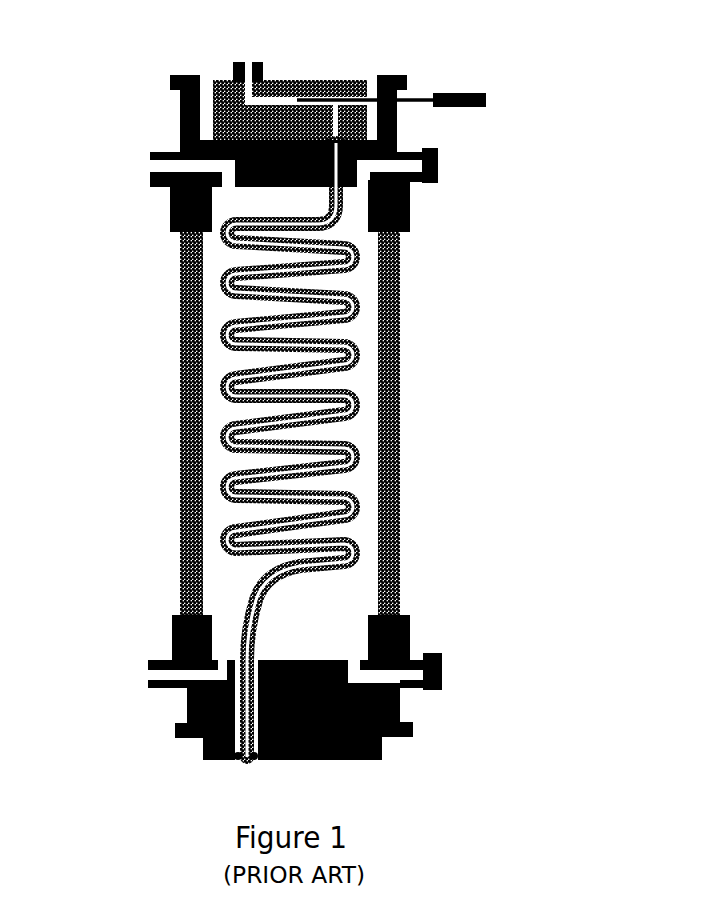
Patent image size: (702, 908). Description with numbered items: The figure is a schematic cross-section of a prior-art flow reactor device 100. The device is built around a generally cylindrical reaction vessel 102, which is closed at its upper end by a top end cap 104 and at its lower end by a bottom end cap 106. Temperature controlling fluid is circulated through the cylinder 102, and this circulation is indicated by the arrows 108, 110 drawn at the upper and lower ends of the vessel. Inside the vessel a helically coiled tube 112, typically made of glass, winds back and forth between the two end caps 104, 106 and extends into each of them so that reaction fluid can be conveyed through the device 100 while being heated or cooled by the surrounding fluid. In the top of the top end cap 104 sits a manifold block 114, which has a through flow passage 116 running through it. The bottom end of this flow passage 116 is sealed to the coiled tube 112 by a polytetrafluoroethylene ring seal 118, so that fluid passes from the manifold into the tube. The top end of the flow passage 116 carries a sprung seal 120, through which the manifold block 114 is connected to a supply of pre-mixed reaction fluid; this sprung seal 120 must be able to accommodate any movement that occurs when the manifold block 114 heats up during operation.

The reactor device 100 is at (474, 268).
The reaction vessel 102 is at (401, 432).
The top end cap 104 is at (171, 80).
The bottom end cap 106 is at (207, 708).
The arrow 108 is at (133, 684).
The arrow 110 is at (150, 167).
The helically coiled tube 112 is at (358, 353).
The manifold block 114 is at (223, 88).
The through flow passage 116 is at (277, 100).
The PTFE ring seal 118 is at (343, 143).
The sprung seal 120 is at (262, 64).